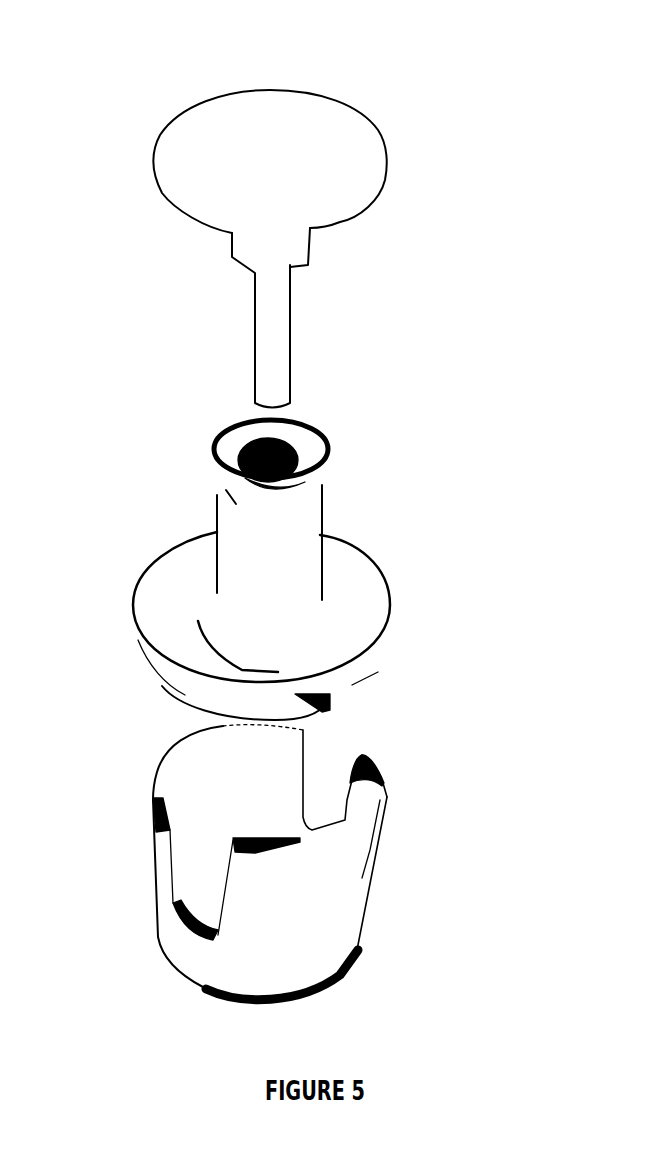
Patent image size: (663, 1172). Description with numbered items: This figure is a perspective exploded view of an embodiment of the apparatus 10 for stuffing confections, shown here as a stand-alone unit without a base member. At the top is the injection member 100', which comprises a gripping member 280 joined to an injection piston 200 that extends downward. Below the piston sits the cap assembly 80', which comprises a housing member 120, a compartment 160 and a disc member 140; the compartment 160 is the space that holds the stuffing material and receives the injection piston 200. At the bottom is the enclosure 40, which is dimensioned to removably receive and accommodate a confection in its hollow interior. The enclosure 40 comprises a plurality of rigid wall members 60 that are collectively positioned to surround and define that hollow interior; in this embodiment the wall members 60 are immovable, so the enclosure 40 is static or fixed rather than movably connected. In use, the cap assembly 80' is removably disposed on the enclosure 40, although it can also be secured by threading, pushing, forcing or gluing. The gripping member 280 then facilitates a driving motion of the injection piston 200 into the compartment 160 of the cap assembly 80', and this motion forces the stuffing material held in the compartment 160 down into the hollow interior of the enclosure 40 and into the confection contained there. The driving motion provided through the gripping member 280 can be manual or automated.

The apparatus for stuffing confections 10 is at (107, 63).
The gripping member 280 is at (343, 173).
The injection member 100' is at (191, 264).
The injection piston 200 is at (278, 390).
The compartment 160 is at (253, 467).
The housing member 120 is at (287, 557).
The disc member 140 is at (342, 635).
The cap assembly 80' is at (199, 615).
The enclosure 40 is at (183, 860).
The wall members 60 is at (343, 880).